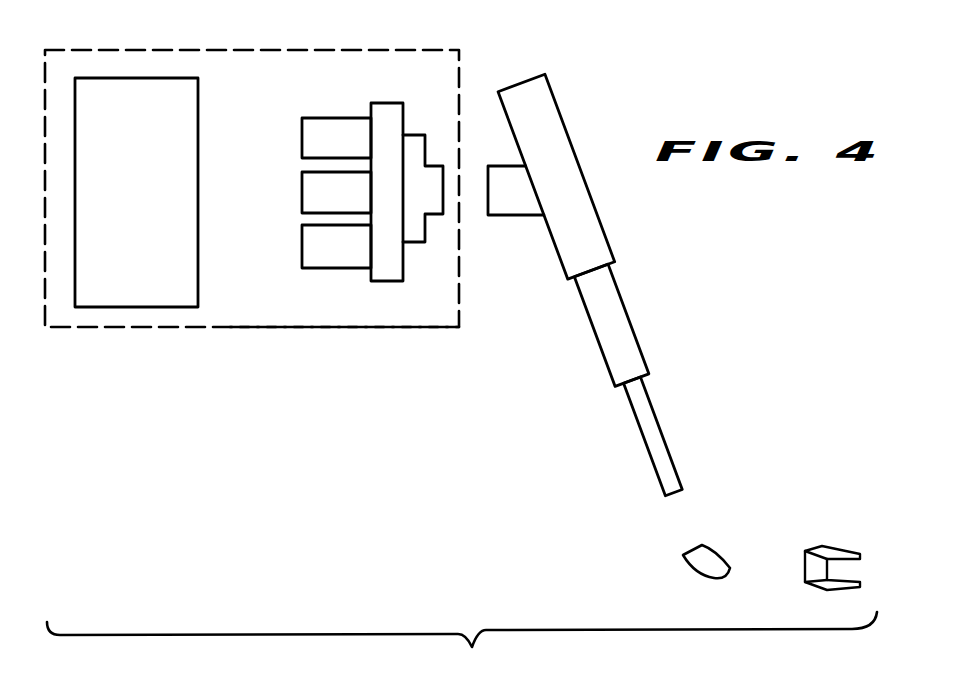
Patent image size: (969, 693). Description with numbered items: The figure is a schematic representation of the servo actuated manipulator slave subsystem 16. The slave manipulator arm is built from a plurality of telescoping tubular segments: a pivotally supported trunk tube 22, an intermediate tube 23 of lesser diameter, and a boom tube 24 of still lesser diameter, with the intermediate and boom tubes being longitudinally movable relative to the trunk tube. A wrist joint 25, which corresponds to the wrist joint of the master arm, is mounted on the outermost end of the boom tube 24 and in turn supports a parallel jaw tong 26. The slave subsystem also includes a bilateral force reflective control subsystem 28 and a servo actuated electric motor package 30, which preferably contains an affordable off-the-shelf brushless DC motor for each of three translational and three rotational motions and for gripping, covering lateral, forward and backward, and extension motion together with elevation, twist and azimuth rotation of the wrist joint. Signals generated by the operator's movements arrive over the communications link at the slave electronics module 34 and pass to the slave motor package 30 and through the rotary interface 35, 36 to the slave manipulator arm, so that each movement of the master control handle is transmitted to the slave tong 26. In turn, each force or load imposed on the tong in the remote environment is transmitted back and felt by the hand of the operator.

The slave subsystem 16 is at (300, 328).
The trunk tube 22 is at (560, 112).
The intermediate tube 23 is at (628, 315).
The boom tube 24 is at (660, 433).
The wrist joint 25 is at (717, 552).
The parallel jaw tong 26 is at (833, 548).
The bilateral force reflective control subsystem 28 is at (378, 328).
The slave motor package 30 is at (388, 103).
The slave electronics module 34 is at (198, 143).
The rotary interface 35 is at (448, 170).
The rotary interface 36 is at (485, 200).